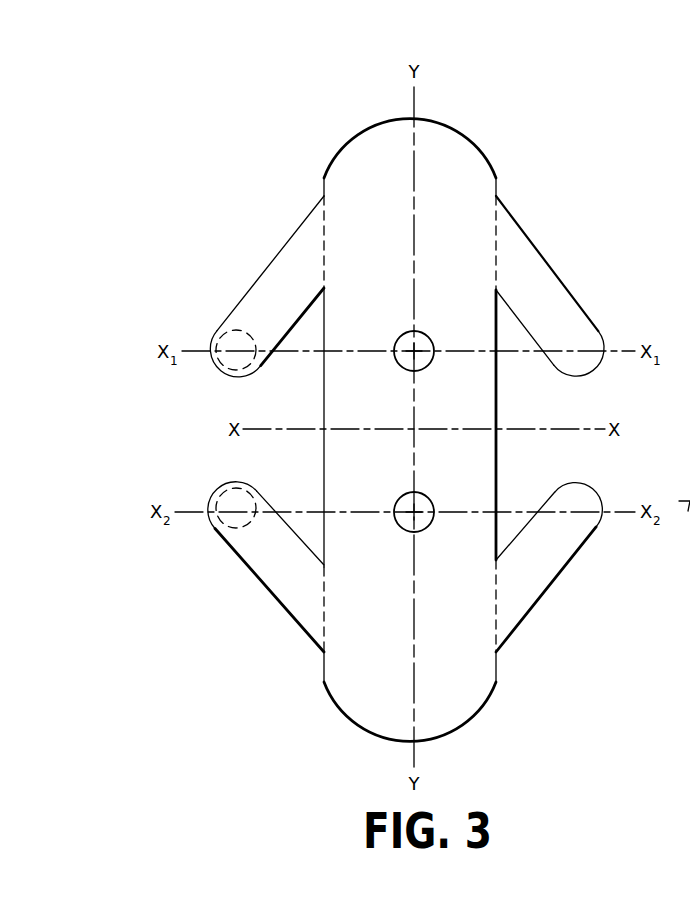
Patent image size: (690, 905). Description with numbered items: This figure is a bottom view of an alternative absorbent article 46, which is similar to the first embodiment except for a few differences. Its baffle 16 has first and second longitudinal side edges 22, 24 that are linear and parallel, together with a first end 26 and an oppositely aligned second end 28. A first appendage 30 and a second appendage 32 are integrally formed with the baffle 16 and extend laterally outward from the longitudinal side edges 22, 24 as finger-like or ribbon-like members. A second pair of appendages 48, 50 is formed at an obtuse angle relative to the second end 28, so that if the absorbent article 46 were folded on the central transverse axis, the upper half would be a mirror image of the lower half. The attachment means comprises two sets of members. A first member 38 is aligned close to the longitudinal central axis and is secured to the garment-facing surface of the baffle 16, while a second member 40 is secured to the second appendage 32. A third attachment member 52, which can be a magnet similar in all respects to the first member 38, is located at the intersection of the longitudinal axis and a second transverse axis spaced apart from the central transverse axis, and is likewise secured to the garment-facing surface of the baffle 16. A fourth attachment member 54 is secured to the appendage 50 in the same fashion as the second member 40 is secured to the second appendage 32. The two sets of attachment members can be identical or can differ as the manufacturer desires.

The baffle 16 is at (472, 183).
The first longitudinal side edge 22 is at (496, 465).
The second longitudinal side edge 24 is at (324, 461).
The first end 26 is at (452, 123).
The second end 28 is at (456, 733).
The first appendage 30 is at (548, 280).
The second appendage 32 is at (300, 245).
The first member 38 is at (423, 335).
The second member 40 is at (237, 328).
The absorbent article 46 is at (572, 126).
The appendage 48 is at (545, 590).
The appendage 50 is at (272, 588).
The third attachment member 52 is at (426, 528).
The fourth attachment member 54 is at (224, 492).